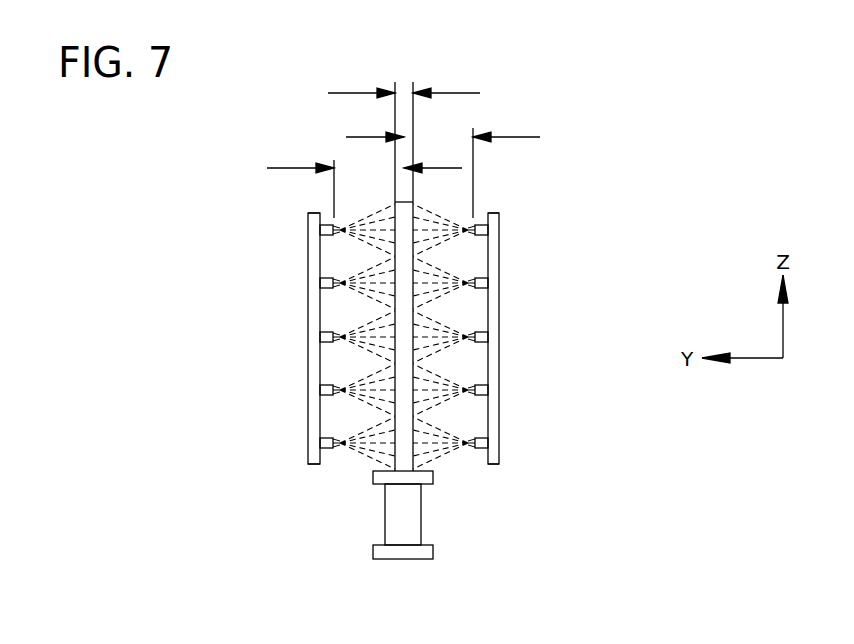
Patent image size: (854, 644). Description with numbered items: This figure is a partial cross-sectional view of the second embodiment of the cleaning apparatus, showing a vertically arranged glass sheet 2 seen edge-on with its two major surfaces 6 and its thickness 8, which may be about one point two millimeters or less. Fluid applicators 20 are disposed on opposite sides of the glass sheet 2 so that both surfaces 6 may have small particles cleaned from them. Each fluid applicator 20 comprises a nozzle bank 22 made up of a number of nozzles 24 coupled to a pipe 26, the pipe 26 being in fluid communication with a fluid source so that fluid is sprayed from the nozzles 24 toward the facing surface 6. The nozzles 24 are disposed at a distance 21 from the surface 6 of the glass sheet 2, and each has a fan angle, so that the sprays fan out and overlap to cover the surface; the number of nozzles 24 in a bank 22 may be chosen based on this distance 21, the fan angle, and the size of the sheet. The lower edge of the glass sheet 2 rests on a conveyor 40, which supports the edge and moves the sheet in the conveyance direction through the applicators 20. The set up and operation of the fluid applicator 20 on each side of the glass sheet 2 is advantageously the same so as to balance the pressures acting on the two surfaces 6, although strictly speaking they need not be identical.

The glass sheet 2 is at (405, 445).
The major surfaces 6 is at (395, 412).
The thickness 8 is at (448, 93).
The fluid applicator 20 is at (522, 218).
The distance 21 is at (353, 168).
The nozzle bank 22 is at (308, 238).
The nozzle 24 is at (322, 337).
The pipe 26 is at (313, 372).
The conveyor 40 is at (380, 515).